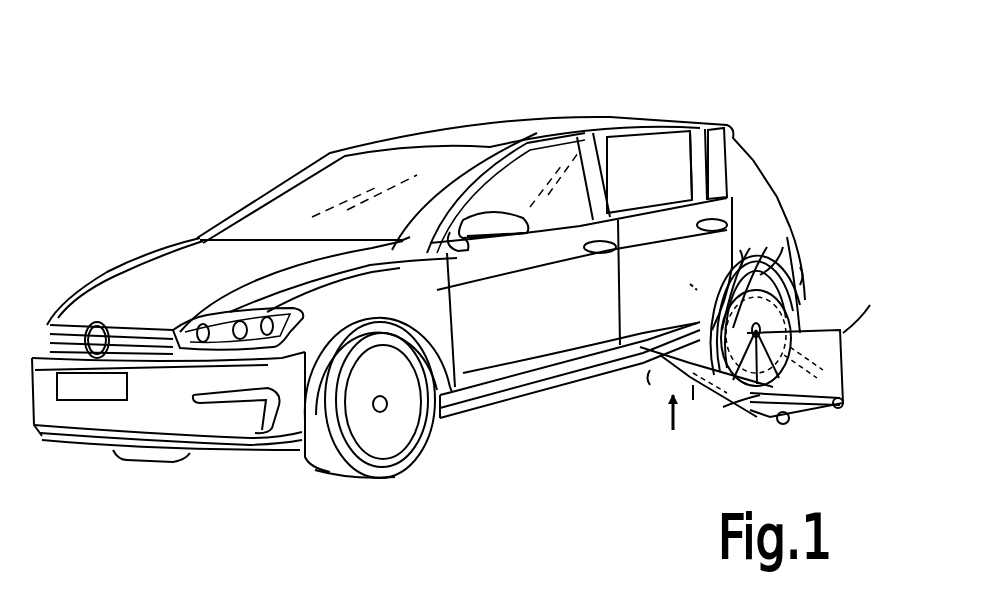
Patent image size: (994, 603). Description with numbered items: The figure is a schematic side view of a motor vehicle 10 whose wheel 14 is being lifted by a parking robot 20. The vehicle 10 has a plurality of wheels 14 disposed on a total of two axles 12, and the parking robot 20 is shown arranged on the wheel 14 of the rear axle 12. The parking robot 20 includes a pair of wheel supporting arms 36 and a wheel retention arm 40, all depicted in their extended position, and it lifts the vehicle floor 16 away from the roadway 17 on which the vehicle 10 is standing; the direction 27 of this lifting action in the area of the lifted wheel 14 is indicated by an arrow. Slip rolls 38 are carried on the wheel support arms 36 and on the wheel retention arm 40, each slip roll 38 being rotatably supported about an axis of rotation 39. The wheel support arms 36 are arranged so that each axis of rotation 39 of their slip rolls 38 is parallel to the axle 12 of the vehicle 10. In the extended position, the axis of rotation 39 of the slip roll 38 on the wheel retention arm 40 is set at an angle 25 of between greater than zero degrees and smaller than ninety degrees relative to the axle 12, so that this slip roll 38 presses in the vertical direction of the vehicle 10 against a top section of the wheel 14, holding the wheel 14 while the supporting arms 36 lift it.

The motor vehicle 10 is at (622, 95).
The axle 12 is at (380, 412).
The wheel 14 is at (420, 445).
The vehicle floor 16 is at (533, 400).
The roadway 17 is at (877, 398).
The parking robot 20 is at (869, 258).
The angle 25 is at (713, 300).
The direction 27 is at (665, 430).
The wheel supporting arm 36 is at (843, 333).
The slip roll 38 is at (790, 230).
The axis of rotation 39 is at (740, 250).
The wheel retention arm 40 is at (800, 267).